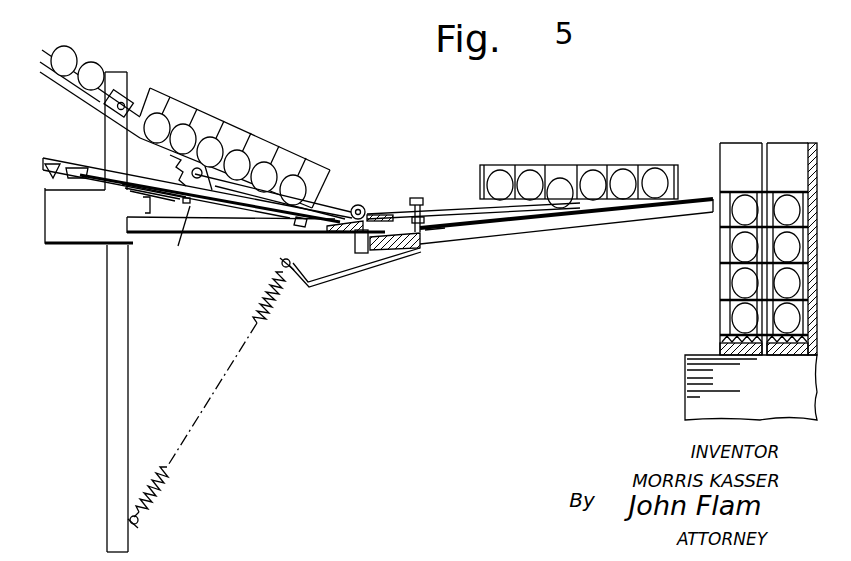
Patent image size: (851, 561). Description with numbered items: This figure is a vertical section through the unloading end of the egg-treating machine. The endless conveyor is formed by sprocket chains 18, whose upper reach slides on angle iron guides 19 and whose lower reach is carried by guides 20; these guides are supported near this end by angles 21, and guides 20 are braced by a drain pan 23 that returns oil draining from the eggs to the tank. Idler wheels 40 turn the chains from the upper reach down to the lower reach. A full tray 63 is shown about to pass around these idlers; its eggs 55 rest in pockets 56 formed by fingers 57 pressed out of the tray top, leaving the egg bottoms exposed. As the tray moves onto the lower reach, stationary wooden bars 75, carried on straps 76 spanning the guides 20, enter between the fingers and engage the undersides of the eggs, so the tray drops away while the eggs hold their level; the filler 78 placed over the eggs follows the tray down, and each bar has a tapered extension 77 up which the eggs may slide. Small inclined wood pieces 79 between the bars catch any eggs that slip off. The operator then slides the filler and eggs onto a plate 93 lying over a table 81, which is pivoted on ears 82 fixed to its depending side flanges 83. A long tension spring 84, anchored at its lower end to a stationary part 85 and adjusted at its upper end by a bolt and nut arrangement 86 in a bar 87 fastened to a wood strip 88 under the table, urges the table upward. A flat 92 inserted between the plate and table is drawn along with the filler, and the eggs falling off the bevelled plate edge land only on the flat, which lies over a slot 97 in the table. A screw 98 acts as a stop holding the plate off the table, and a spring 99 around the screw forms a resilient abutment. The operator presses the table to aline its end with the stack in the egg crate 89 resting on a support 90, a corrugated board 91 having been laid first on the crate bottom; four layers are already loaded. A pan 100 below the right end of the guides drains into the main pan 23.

The sprocket chains 18 is at (126, 104).
The angle iron guides 19 is at (118, 96).
The angle iron guides 20 is at (330, 200).
The angles 21 is at (128, 370).
The drain pan 23 is at (60, 245).
The idler wheels 40 is at (172, 161).
The eggs 55 is at (92, 62).
The pockets 56 is at (48, 166).
The fingers 57 is at (52, 180).
The tray 63 is at (78, 88).
The stationary wooden bars 75 is at (183, 233).
The straps 76 is at (146, 238).
The tapered extension 77 is at (72, 181).
The filler 78 is at (303, 164).
The inclined wood pieces 79 is at (348, 207).
The table 81 is at (749, 249).
The ears 82 is at (360, 254).
The side flanges 83 is at (636, 218).
The tension spring 84 is at (264, 328).
The stationary part 85 is at (136, 526).
The bolt and nut arrangement 86 is at (282, 263).
The bar 87 is at (330, 273).
The wood strip 88 is at (421, 247).
The egg crate 89 is at (791, 150).
The support 90 is at (698, 403).
The corrugated board 91 is at (719, 337).
The flat 92 is at (683, 188).
The plate 93 is at (448, 208).
The slot 97 is at (565, 220).
The screw 98 is at (417, 197).
The spring 99 is at (435, 229).
The pan 100 is at (225, 238).